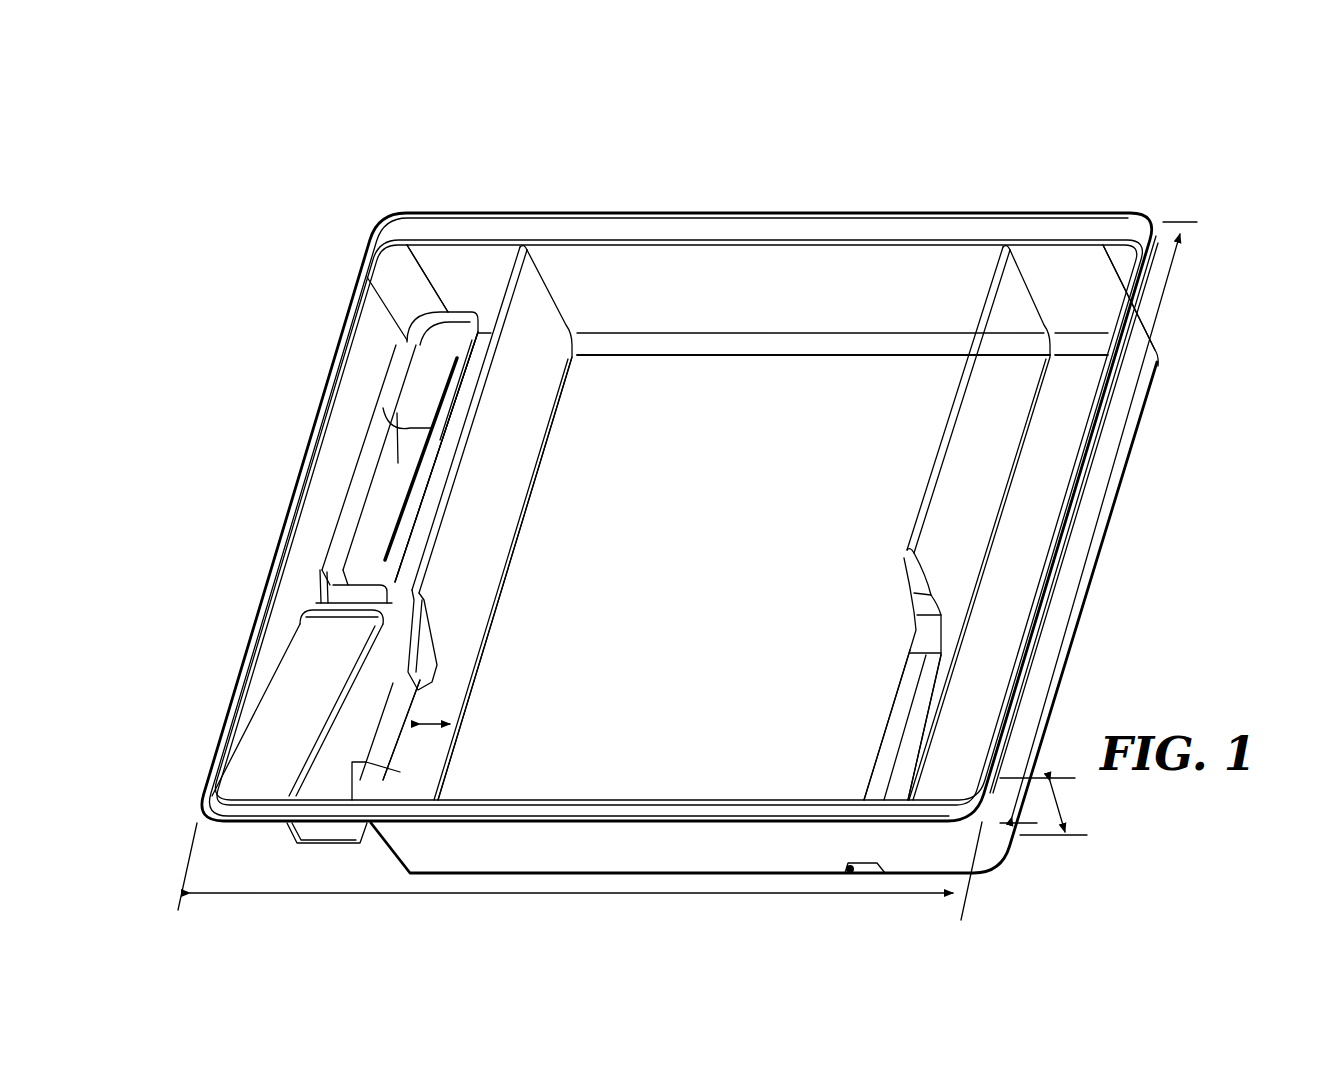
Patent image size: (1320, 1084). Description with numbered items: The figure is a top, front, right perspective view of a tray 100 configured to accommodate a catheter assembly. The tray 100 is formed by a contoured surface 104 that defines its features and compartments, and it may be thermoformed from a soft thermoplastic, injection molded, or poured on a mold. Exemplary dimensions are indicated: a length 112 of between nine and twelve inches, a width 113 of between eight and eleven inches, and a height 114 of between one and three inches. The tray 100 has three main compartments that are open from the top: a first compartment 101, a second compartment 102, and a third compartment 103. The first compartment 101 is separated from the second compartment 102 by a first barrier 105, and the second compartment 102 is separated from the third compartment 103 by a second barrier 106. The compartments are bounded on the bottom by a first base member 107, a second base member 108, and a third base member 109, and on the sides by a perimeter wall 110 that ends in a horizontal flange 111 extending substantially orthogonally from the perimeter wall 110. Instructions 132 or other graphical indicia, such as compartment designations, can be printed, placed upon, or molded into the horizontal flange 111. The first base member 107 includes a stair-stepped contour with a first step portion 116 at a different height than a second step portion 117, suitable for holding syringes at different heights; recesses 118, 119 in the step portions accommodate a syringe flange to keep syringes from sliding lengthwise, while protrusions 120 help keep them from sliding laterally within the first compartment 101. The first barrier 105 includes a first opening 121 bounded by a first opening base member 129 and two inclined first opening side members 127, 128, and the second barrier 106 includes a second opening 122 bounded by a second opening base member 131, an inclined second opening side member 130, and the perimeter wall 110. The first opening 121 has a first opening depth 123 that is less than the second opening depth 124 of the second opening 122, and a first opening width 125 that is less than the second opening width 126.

The tray 100 is at (262, 292).
The first compartment 101 is at (473, 277).
The second compartment 102 is at (593, 290).
The third compartment 103 is at (1060, 287).
The contoured surface 104 is at (1140, 445).
The first barrier 105 is at (533, 313).
The second barrier 106 is at (1010, 323).
The first base member 107 is at (297, 703).
The second base member 108 is at (813, 435).
The third base member 109 is at (1070, 408).
The perimeter wall 110 is at (927, 278).
The horizontal flange 111 is at (410, 228).
The length 112 is at (1095, 548).
The width 113 is at (560, 893).
The height 114 is at (1043, 825).
The first step portion 116 is at (400, 462).
The second step portion 117 is at (487, 315).
The recess 118 is at (322, 578).
The recess 119 is at (420, 520).
The protrusions 120 is at (398, 500).
The first opening 121 is at (377, 733).
The second opening 122 is at (878, 727).
The first opening depth 123 is at (468, 725).
The second opening depth 124 is at (940, 727).
The first opening width 125 is at (390, 730).
The second opening width 126 is at (881, 725).
The first opening side member 127 is at (424, 655).
The first opening side member 128 is at (400, 768).
The first opening base member 129 is at (432, 700).
The second opening side member 130 is at (925, 600).
The second opening base member 131 is at (915, 655).
The instructions 132 is at (717, 213).